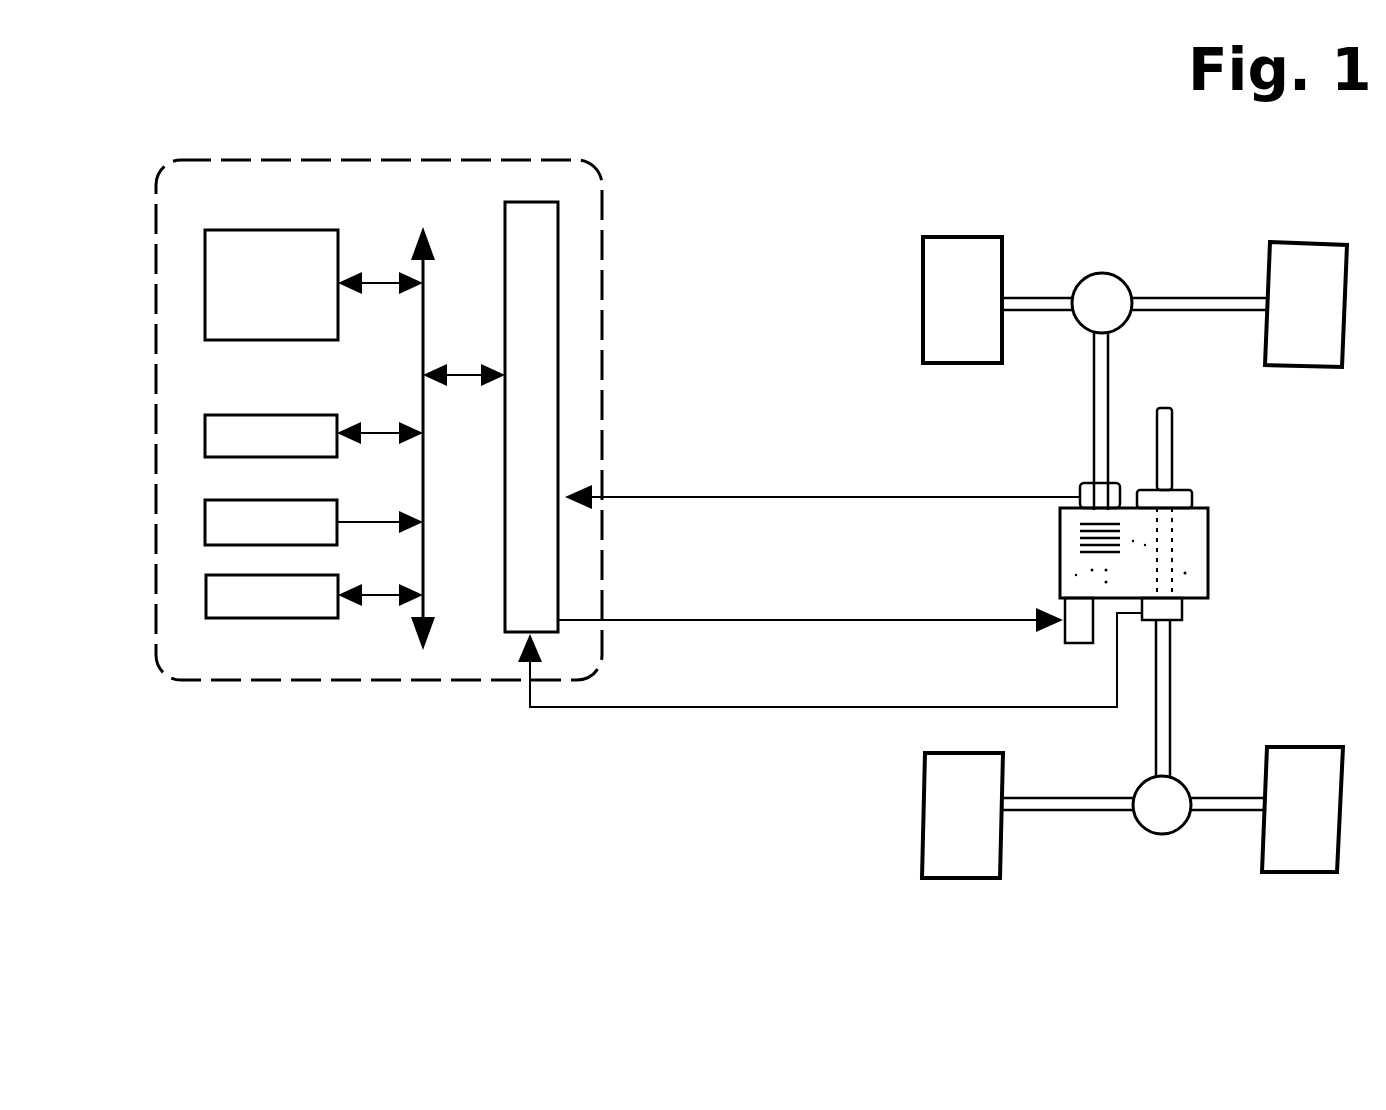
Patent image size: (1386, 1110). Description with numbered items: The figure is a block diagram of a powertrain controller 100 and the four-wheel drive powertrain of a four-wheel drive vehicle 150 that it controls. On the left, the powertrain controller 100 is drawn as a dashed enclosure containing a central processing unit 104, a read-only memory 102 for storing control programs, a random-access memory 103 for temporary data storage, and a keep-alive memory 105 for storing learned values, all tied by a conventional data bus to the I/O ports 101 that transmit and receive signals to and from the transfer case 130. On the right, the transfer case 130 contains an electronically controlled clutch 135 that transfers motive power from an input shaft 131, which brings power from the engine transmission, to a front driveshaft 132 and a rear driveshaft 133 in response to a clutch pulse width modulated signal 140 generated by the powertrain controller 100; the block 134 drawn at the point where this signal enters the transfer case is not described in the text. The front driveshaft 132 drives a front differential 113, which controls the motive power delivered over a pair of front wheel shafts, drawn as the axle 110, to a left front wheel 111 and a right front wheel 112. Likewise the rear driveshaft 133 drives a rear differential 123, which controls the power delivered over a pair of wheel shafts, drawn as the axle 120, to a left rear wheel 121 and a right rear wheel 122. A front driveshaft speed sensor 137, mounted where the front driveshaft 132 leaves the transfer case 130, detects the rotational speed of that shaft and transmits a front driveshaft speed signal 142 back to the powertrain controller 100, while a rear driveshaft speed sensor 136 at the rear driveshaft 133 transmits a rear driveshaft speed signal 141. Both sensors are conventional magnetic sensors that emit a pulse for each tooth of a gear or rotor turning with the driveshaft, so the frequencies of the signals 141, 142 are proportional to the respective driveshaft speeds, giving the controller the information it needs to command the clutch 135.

The powertrain controller 100 is at (602, 333).
The I/O ports 101 is at (492, 250).
The read-only memory 102 is at (198, 518).
The random-access memory 103 is at (198, 430).
The central processing unit 104 is at (213, 253).
The keep-alive memory 105 is at (200, 602).
The front axle 110 is at (1177, 298).
The left front wheel 111 is at (918, 280).
The right front wheel 112 is at (1265, 256).
The front differential 113 is at (1078, 287).
The rear axle 120 is at (1038, 812).
The left rear wheel 121 is at (942, 885).
The right rear wheel 122 is at (1330, 875).
The rear differential 123 is at (1172, 832).
The transfer case 130 is at (1210, 540).
The input shaft 131 is at (1175, 440).
The front driveshaft 132 is at (1090, 425).
The rear driveshaft 133 is at (1170, 688).
The clutch actuator 134 is at (1078, 643).
The electronically controlled clutch 135 is at (1072, 543).
The rear driveshaft speed sensor 136 is at (1182, 620).
The front driveshaft speed sensor 137 is at (1077, 482).
The clutch pulse width modulated signal 140 is at (757, 623).
The rear driveshaft speed signal 141 is at (690, 712).
The front driveshaft speed signal 142 is at (806, 493).
The four-wheel drive vehicle 150 is at (788, 866).